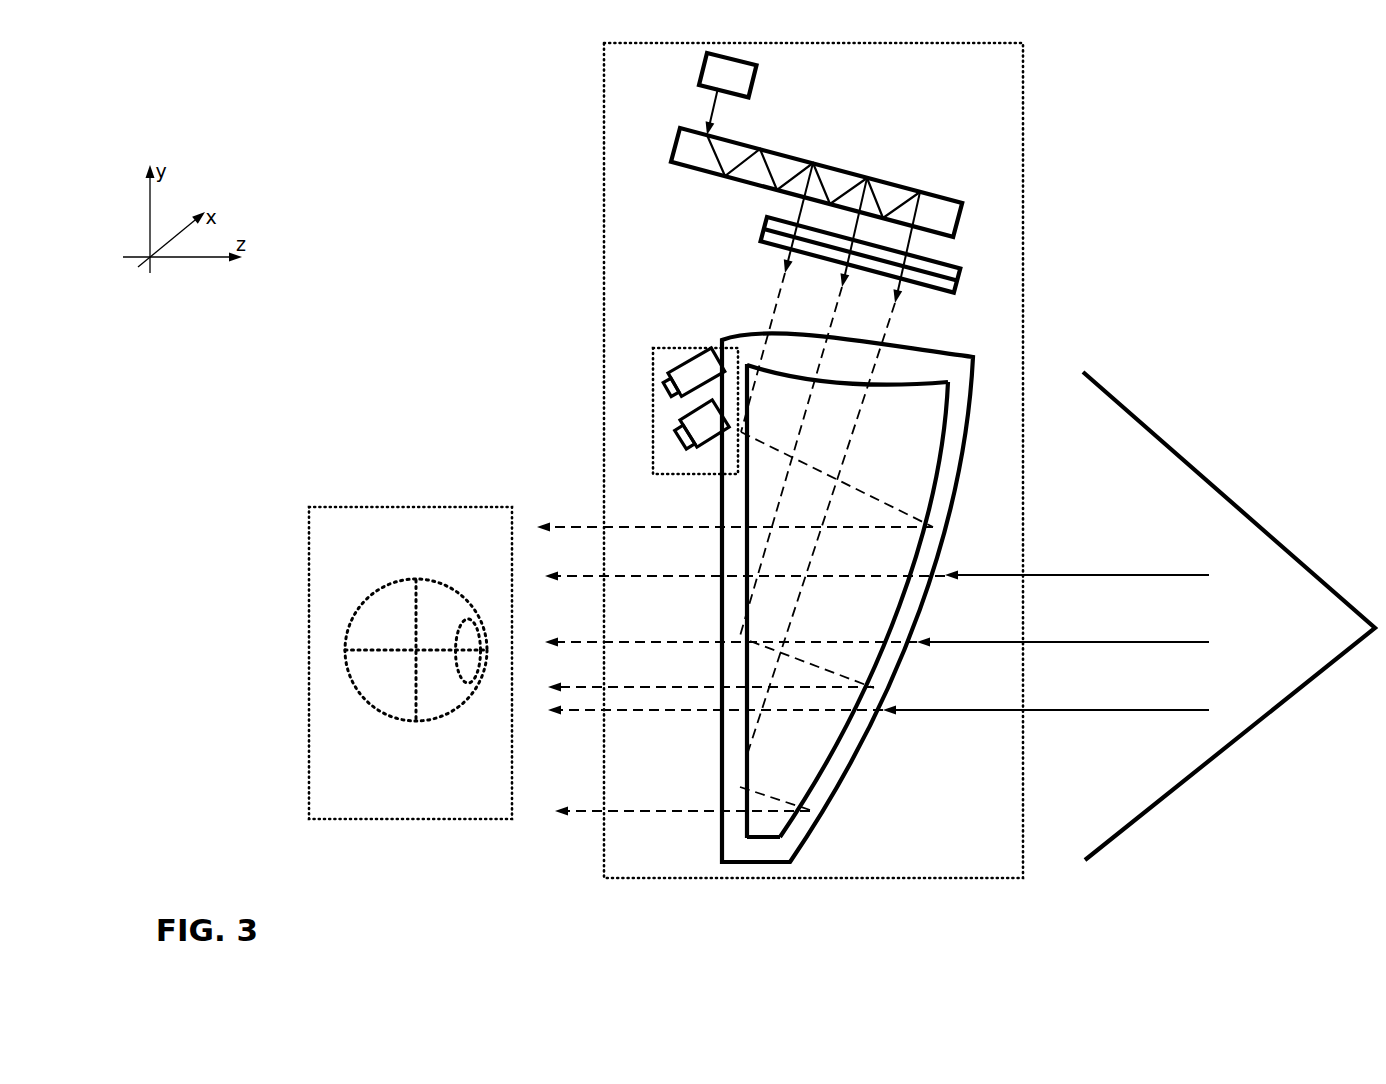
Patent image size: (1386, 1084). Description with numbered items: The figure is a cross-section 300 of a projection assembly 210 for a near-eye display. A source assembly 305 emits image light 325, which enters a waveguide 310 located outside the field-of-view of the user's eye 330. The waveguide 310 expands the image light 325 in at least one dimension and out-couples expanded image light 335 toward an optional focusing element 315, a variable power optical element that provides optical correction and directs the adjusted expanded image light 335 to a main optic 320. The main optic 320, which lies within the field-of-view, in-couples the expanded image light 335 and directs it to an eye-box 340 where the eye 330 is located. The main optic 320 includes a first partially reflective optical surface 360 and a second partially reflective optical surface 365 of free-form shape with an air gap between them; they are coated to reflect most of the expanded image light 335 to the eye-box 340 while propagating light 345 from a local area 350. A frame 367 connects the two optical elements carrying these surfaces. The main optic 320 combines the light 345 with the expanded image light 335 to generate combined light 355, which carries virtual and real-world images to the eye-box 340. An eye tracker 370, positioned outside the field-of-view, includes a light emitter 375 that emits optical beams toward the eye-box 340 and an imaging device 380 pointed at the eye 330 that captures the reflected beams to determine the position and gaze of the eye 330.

The cross-section 300 is at (166, 66).
The projection assembly 210 is at (1023, 110).
The source assembly 305 is at (701, 69).
The image light 325 is at (713, 112).
The waveguide 310 is at (962, 221).
The focusing element 315 is at (960, 280).
The expanded image light 335 is at (890, 325).
The main optic 320 is at (784, 601).
The frame 367 is at (900, 360).
The first partially reflective optical surface 360 is at (732, 777).
The second partially reflective optical surface 365 is at (833, 778).
The eye tracker 370 is at (539, 386).
The light emitter 375 is at (662, 378).
The imaging device 380 is at (672, 430).
The eye-box 340 is at (309, 557).
The eye 330 is at (353, 685).
The combined light 355 is at (577, 712).
The light 345 is at (1134, 710).
The local area 350 is at (1267, 719).